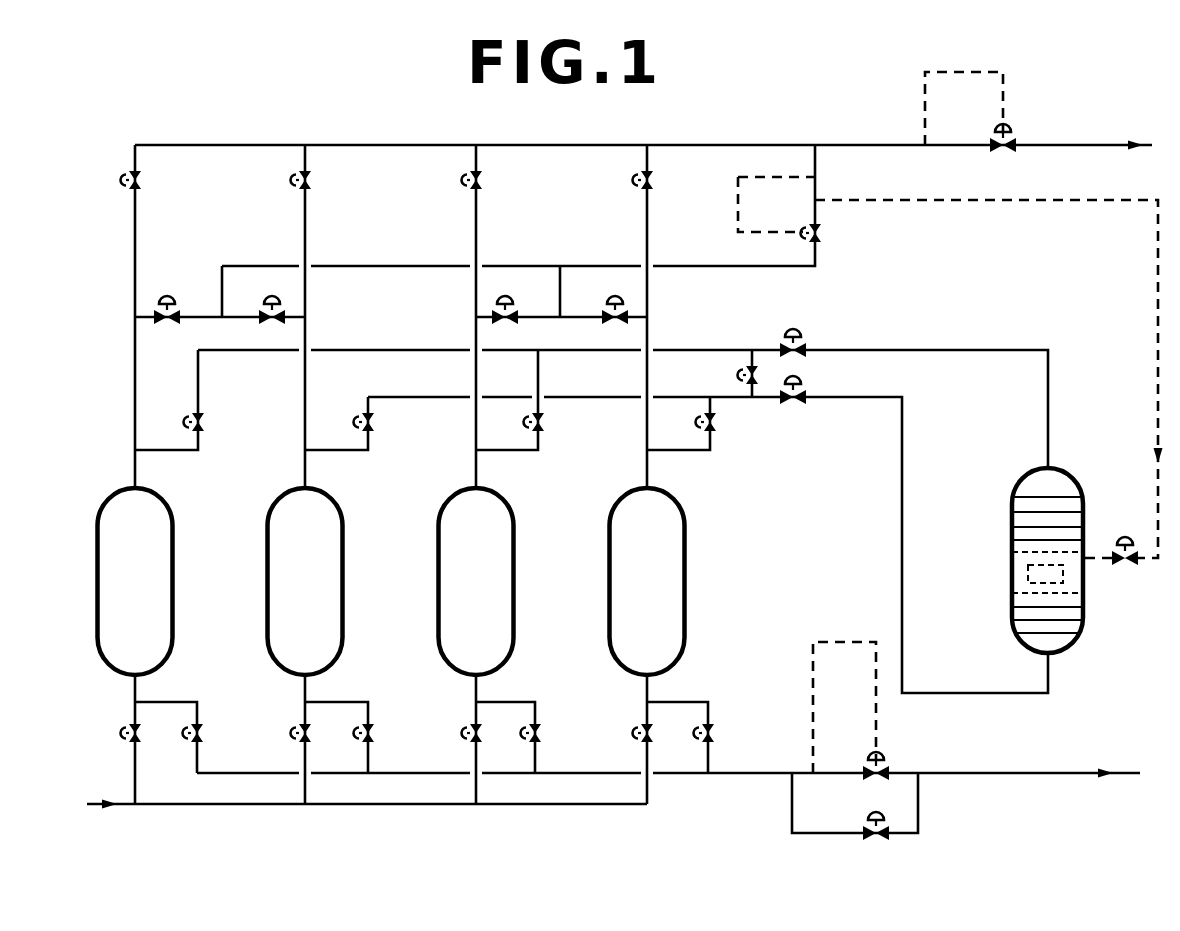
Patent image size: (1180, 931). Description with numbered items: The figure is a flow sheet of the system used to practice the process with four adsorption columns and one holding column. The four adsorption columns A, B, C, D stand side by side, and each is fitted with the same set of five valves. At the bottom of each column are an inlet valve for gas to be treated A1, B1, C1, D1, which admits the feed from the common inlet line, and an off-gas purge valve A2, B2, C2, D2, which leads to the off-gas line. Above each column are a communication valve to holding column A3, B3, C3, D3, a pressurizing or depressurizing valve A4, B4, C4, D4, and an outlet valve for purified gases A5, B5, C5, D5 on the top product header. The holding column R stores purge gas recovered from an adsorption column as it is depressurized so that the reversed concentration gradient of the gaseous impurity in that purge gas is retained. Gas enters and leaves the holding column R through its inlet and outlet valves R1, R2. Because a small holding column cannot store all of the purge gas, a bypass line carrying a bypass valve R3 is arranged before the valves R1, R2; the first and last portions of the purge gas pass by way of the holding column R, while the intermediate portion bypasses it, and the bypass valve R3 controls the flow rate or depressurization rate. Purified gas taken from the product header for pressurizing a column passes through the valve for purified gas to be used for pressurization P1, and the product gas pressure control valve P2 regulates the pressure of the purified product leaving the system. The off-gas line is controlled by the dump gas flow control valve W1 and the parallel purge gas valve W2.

The adsorption column A is at (135, 581).
The adsorption column B is at (305, 581).
The adsorption column C is at (476, 581).
The adsorption column D is at (647, 581).
The holding column R is at (1050, 548).
The inlet valve for gas to be treated A1 is at (148, 753).
The off-gas purge valve A2 is at (214, 738).
The communication valve to holding column A3 is at (213, 423).
The pressurizing or depressurizing valve A4 is at (168, 329).
The outlet valve for purified gas A5 is at (150, 181).
The inlet valve for gas to be treated B1 is at (320, 753).
The off-gas purge valve B2 is at (382, 738).
The communication valve to holding column B3 is at (382, 423).
The pressurizing or depressurizing valve B4 is at (251, 327).
The outlet valve for purified gas B5 is at (321, 181).
The inlet valve for gas to be treated C1 is at (489, 750).
The off-gas purge valve C2 is at (551, 731).
The communication valve to holding column C3 is at (553, 423).
The pressurizing or depressurizing valve C4 is at (519, 292).
The outlet valve for purified gas C5 is at (491, 181).
The inlet valve for gas to be treated D1 is at (661, 750).
The off-gas purge valve D2 is at (724, 731).
The communication valve to holding column D3 is at (726, 423).
The pressurizing or depressurizing valve D4 is at (596, 292).
The outlet valve for purified gas D5 is at (663, 181).
The inlet valve of the holding column R1 is at (794, 322).
The outlet valve of the holding column R2 is at (802, 408).
The bypass valve R3 is at (723, 375).
The valve for purified gas to be used for pressurization P1 is at (829, 233).
The product gas pressure control valve P2 is at (1003, 155).
The dump gas flow control valve W1 is at (875, 781).
The purge gas valve W2 is at (875, 843).